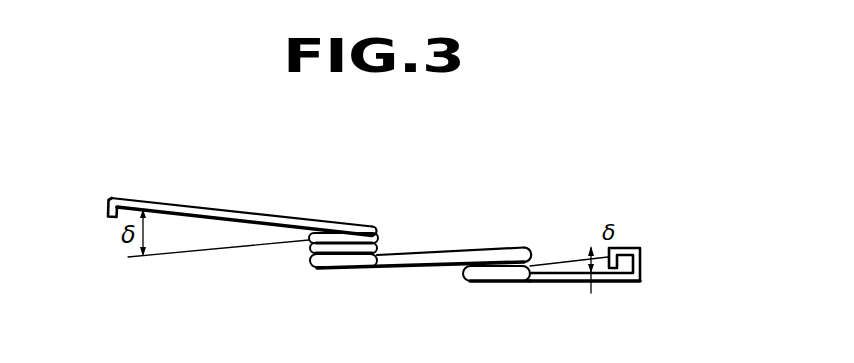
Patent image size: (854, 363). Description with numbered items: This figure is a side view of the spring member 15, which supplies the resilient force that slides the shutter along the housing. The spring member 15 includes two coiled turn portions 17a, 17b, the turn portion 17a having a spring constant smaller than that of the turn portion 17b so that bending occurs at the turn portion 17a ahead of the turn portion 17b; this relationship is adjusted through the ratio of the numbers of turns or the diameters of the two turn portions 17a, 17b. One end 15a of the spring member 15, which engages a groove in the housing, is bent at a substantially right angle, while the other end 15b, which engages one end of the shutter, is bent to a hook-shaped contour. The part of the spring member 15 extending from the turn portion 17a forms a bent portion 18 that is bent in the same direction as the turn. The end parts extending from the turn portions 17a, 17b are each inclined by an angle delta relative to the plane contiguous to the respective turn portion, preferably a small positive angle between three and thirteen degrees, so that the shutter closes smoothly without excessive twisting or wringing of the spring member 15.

The spring member 15 is at (458, 216).
The one end of the spring member 15a is at (110, 199).
The other end of the spring member 15b is at (643, 262).
The turn portion 17a is at (307, 265).
The turn portion 17b is at (470, 273).
The bent portion 18 is at (279, 216).